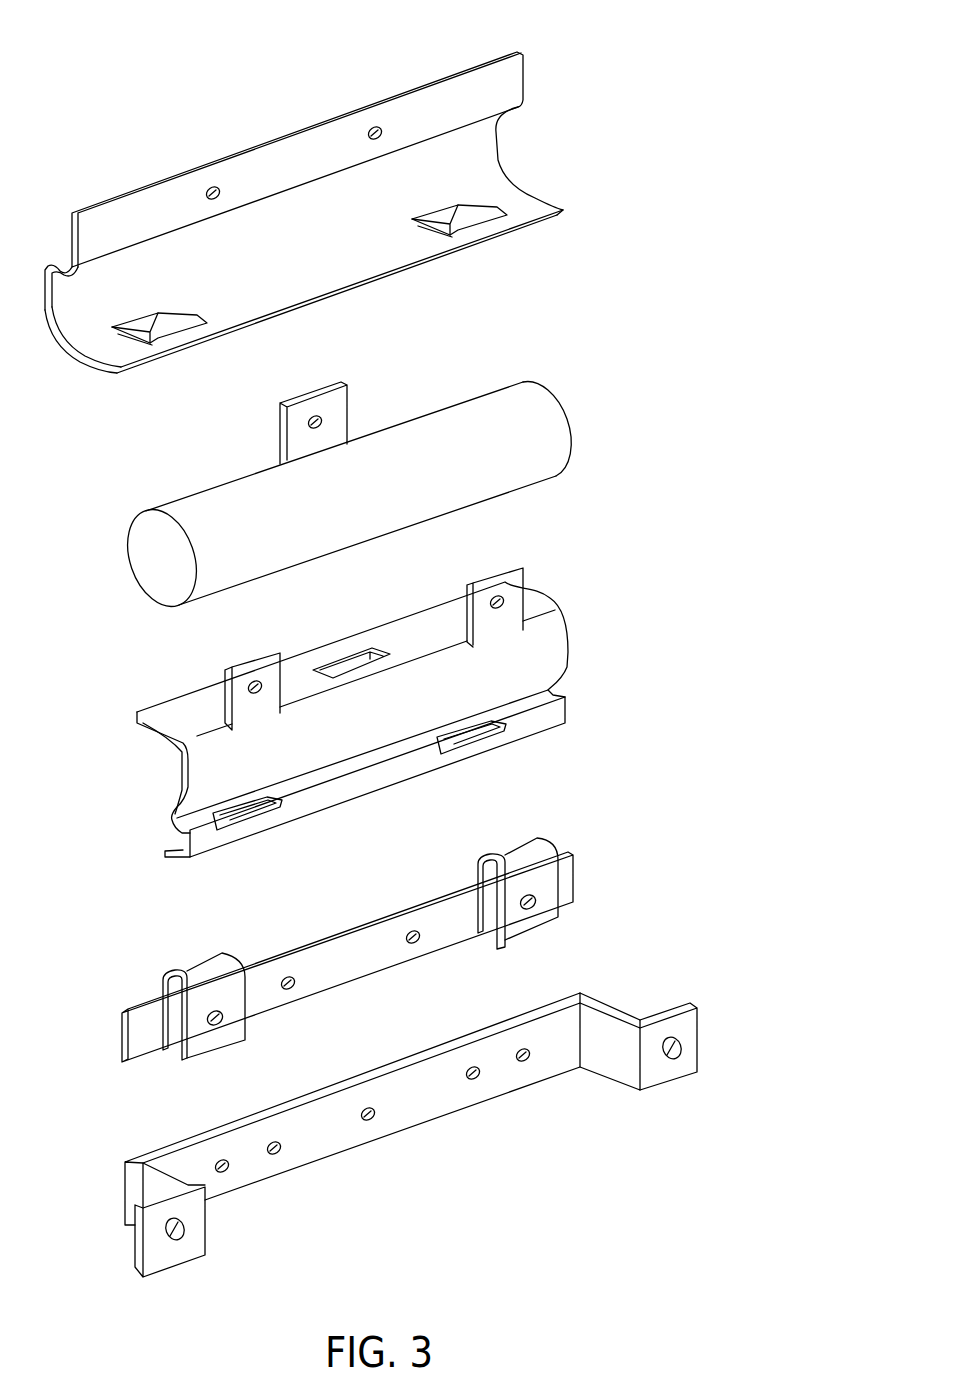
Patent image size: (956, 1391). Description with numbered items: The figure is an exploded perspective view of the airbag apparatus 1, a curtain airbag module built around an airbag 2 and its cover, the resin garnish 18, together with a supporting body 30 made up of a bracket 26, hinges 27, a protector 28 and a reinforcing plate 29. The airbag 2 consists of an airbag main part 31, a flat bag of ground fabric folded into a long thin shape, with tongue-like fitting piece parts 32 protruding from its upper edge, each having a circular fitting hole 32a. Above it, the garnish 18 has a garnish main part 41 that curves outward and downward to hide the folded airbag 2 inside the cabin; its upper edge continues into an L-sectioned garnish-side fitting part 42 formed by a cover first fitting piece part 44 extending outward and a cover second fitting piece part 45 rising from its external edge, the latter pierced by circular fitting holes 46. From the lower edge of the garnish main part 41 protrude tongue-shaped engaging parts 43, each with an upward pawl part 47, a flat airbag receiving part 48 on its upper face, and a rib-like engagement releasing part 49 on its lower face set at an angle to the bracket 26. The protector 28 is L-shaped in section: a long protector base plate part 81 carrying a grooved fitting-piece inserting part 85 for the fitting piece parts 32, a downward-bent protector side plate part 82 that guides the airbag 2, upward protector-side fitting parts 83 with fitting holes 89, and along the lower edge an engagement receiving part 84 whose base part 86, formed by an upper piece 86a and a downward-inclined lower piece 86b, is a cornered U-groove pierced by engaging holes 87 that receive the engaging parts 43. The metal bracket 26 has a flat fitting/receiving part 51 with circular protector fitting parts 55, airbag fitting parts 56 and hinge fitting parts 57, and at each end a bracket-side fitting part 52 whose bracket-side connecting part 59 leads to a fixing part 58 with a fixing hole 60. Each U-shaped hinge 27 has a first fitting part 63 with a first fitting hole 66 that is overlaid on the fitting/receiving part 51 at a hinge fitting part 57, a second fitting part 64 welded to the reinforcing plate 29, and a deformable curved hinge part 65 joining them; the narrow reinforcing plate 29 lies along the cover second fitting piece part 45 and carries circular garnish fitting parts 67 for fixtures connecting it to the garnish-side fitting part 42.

The airbag apparatus 1 is at (70, 41).
The airbag 2 is at (333, 499).
The garnish 18 is at (498, 150).
The bracket 26 is at (408, 1144).
The hinge 27 is at (372, 950).
The protector 28 is at (327, 714).
The reinforcing plate 29 is at (347, 956).
The supporting body 30 is at (383, 950).
The airbag main part 31 is at (156, 580).
The fitting piece part 32 is at (321, 423).
The fitting hole 32a is at (324, 421).
The garnish main part 41 is at (287, 226).
The garnish-side fitting part 42 is at (297, 159).
The engaging part 43 is at (337, 285).
The cover first fitting piece part 44 is at (62, 257).
The cover second fitting piece part 45 is at (116, 215).
The fitting hole 46 is at (212, 187).
The pawl part 47 is at (182, 321).
The airbag receiving part 48 is at (148, 321).
The engagement releasing part 49 is at (152, 345).
The fitting/receiving part 51 is at (352, 1115).
The bracket-side fitting part 52 is at (201, 1257).
The protector fitting part 55 is at (224, 1172).
The airbag fitting part 56 is at (370, 1120).
The hinge fitting part 57 is at (276, 1154).
The fixing part 58 is at (165, 1268).
The bracket-side connecting part 59 is at (128, 1188).
The fixing hole 60 is at (165, 1240).
The first fitting part 63 is at (202, 1056).
The second fitting part 64 is at (177, 1051).
The hinge part 65 is at (205, 971).
The first fitting hole 66 is at (220, 1022).
The garnish fitting part 67 is at (289, 977).
The protector base plate part 81 is at (187, 701).
The protector side plate part 82 is at (378, 705).
The protector-side fitting part 83 is at (270, 670).
The engagement receiving part 84 is at (325, 796).
The fitting-piece inserting part 85 is at (356, 657).
The base part 86 is at (145, 855).
The upper piece 86a is at (160, 838).
The lower piece 86b is at (169, 858).
The engaging hole 87 is at (250, 816).
The fitting hole 89 is at (254, 681).